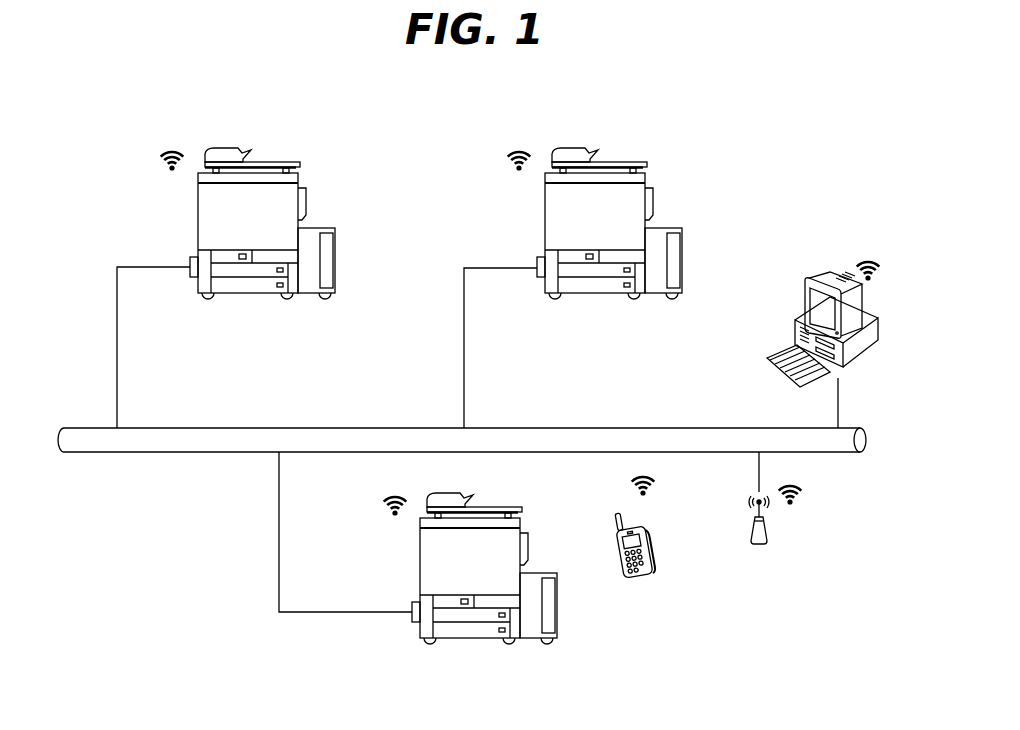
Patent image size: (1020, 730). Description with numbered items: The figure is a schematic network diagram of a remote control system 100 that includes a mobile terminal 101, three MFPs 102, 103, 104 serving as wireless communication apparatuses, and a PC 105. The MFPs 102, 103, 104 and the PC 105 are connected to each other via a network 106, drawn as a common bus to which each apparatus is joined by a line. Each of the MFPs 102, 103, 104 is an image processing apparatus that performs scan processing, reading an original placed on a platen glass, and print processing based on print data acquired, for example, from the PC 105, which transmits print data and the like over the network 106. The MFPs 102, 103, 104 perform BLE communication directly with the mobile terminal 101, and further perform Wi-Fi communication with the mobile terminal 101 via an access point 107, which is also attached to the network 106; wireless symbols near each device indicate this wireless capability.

The remote control system 100 is at (782, 117).
The mobile terminal 101 is at (652, 548).
The MFP 102 is at (557, 610).
The MFP 103 is at (335, 265).
The MFP 104 is at (682, 265).
The PC 105 is at (864, 353).
The network 106 is at (84, 428).
The access point 107 is at (759, 544).